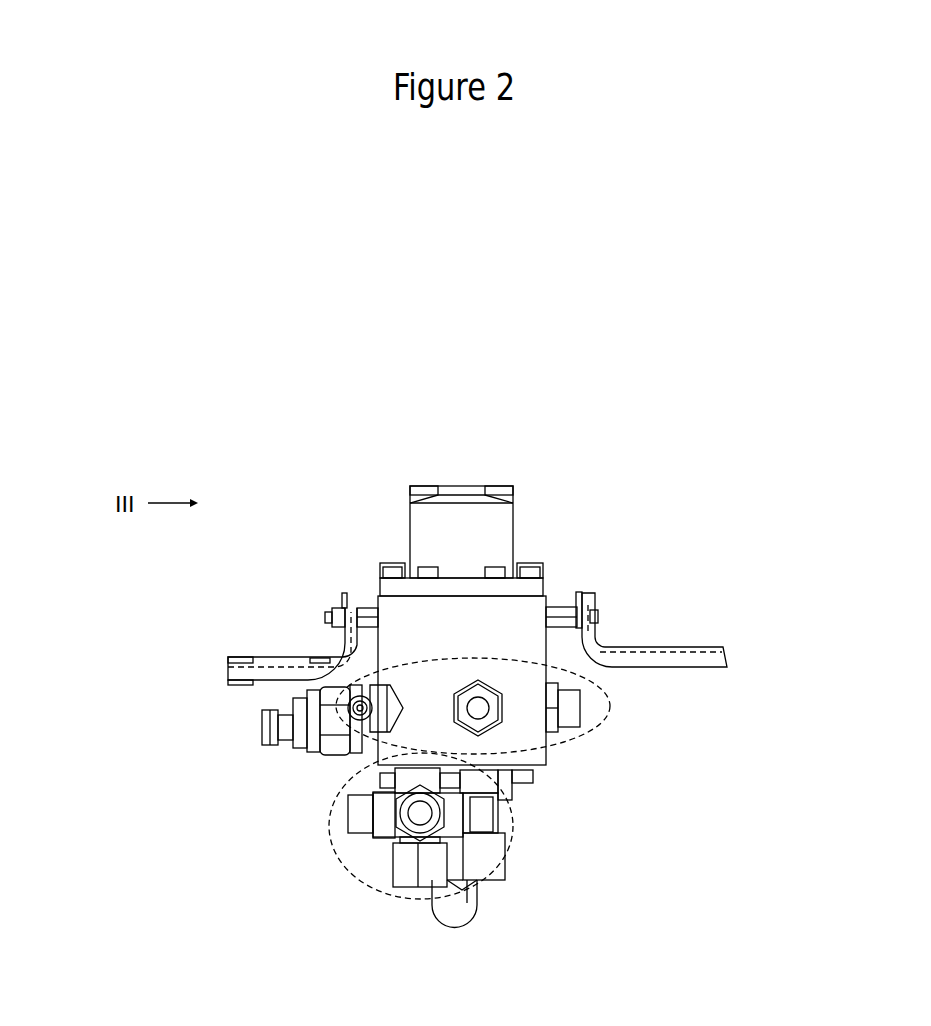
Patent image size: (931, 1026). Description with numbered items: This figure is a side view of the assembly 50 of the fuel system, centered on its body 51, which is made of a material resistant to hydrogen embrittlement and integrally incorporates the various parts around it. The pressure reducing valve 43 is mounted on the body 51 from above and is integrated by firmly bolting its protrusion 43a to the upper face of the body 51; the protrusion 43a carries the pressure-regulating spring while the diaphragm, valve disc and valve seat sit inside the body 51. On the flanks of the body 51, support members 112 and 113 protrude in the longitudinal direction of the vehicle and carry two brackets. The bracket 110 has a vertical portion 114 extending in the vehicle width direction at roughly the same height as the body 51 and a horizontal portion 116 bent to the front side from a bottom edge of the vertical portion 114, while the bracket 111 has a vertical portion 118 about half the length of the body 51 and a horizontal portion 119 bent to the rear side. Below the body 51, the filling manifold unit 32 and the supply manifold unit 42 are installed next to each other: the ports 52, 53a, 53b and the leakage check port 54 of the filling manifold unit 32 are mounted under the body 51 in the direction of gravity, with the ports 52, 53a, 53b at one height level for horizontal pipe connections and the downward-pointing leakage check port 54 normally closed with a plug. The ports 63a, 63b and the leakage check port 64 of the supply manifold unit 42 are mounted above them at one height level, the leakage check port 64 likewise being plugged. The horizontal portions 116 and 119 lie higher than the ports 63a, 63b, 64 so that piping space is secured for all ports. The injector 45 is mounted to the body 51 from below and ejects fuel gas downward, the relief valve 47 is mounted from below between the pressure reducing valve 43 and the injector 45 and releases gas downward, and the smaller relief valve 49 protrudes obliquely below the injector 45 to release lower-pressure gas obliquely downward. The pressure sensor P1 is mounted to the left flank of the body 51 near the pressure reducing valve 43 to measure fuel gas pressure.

The assembly 50 is at (660, 468).
The pressure reducing valve 43 is at (521, 538).
The protrusion 43a is at (457, 527).
The body 51 is at (517, 615).
The support member 112 is at (370, 603).
The bracket 110 is at (245, 545).
The vertical portion 114 is at (338, 606).
The horizontal portion 116 is at (280, 667).
The bracket 111 is at (722, 560).
The support member 113 is at (555, 608).
The vertical portion 118 is at (583, 600).
The horizontal portion 119 is at (633, 655).
The supply manifold unit 42 is at (593, 730).
The pressure sensor P1 is at (262, 738).
The port 63a is at (372, 730).
The leakage check port 64 is at (495, 714).
The port 63b is at (575, 725).
The relief valve 47 is at (515, 790).
The port 52 is at (400, 820).
The port 53a is at (357, 815).
The port 53b is at (480, 818).
The leakage check port 54 is at (407, 875).
The injector 45 is at (505, 878).
The relief valve 49 is at (458, 918).
The filling manifold unit 32 is at (358, 885).